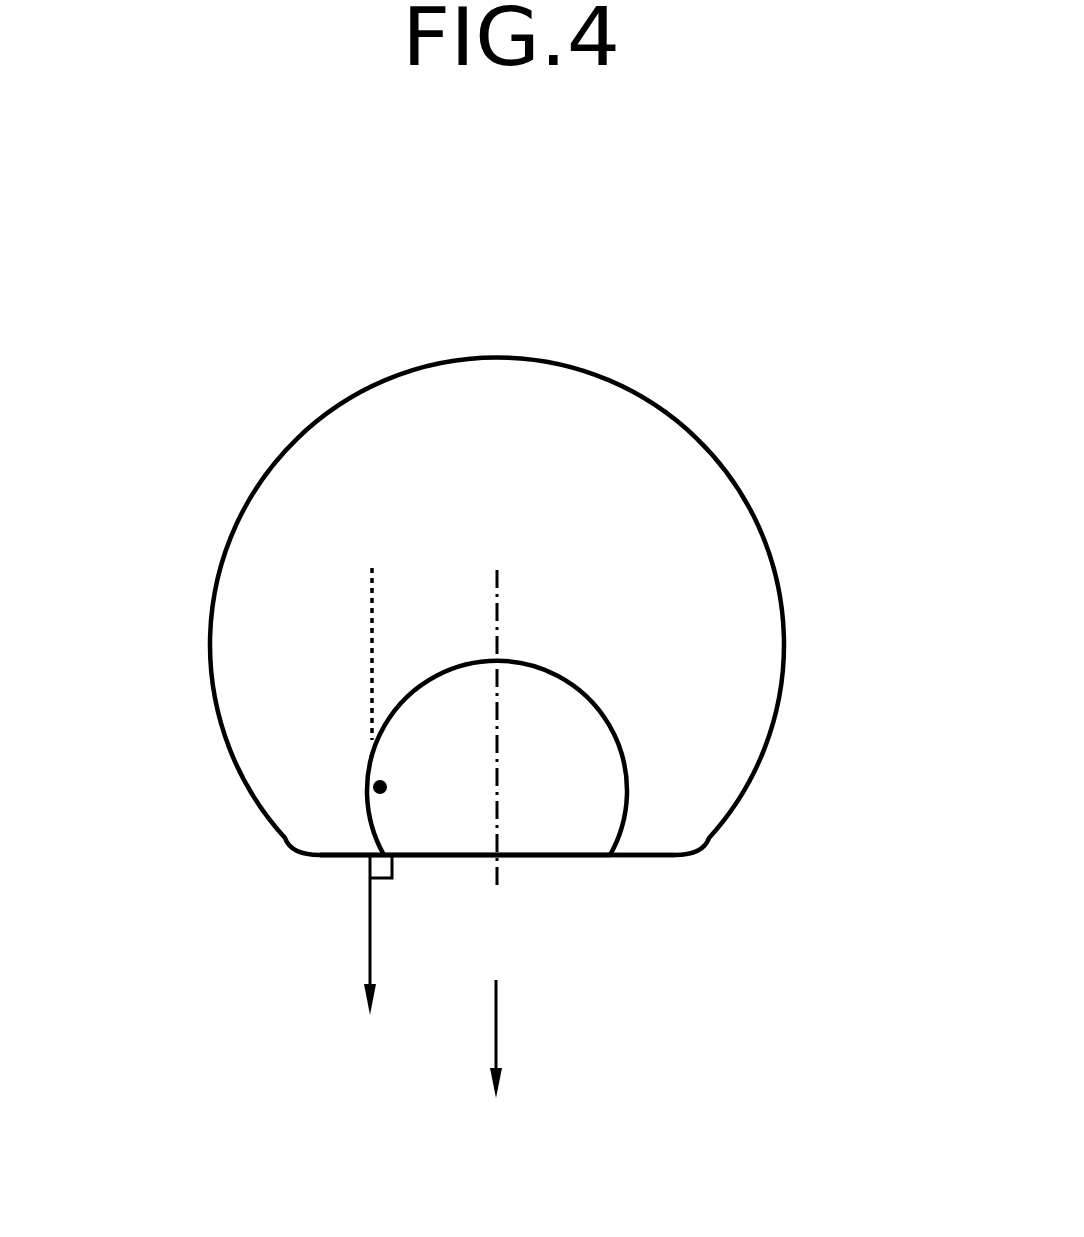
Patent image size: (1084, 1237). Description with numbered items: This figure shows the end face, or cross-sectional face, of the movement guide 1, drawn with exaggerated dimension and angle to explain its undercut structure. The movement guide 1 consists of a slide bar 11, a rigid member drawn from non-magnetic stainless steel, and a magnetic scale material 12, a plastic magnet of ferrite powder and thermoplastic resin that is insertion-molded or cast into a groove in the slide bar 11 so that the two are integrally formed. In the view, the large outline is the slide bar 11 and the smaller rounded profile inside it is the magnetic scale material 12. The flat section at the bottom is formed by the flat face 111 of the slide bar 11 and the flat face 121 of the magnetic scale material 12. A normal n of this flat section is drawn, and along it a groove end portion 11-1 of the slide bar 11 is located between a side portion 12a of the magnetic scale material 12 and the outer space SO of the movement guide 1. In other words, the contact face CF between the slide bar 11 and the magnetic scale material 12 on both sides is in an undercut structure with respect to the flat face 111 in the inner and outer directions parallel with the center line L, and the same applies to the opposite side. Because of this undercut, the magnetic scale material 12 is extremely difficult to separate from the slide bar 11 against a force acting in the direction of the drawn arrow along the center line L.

The movement guide 1 is at (729, 435).
The slide bar 11 is at (728, 552).
The flat face 111 is at (352, 857).
The groove end portion 11-1 is at (363, 832).
The magnetic scale material 12 is at (587, 750).
The side portion 12a is at (382, 786).
The flat face 121 is at (570, 857).
The contact face CF is at (345, 809).
The center line L is at (498, 612).
The normal n is at (369, 959).
The outer space SO is at (338, 1017).